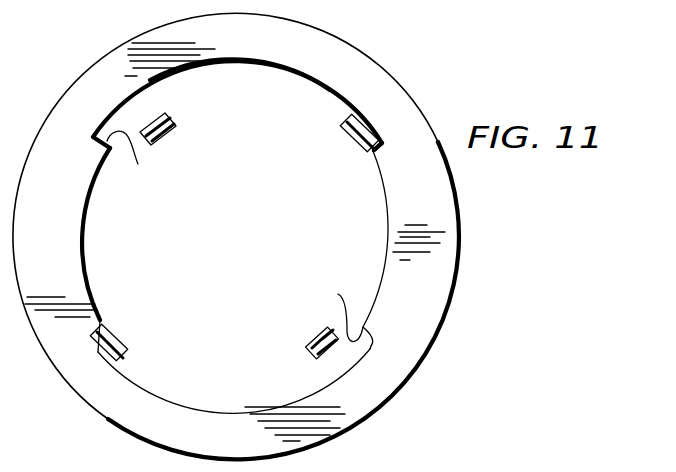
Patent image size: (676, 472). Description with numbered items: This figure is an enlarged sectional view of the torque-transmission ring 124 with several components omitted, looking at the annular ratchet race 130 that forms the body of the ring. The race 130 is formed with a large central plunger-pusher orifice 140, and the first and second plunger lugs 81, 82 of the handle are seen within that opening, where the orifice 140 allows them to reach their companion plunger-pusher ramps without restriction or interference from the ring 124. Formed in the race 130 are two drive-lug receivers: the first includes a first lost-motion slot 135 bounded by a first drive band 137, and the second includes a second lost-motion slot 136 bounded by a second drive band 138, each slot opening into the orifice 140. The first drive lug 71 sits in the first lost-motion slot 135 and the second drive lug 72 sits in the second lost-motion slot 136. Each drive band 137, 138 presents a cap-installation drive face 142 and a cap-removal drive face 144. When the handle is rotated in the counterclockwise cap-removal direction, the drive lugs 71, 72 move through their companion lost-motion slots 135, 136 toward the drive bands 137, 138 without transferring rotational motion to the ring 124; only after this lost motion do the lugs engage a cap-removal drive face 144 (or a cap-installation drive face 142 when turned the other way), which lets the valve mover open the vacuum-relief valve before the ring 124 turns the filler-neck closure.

The torque-transmission ring 124 is at (397, 67).
The annular ratchet race 130 is at (390, 119).
The second lost-motion slot 136 is at (260, 88).
The second drive band 138 is at (392, 210).
The first lost-motion slot 135 is at (230, 401).
The first drive band 137 is at (72, 254).
The plunger-pusher orifice 140 is at (317, 215).
The first plunger lug 81 is at (168, 113).
The second drive lug 72 is at (342, 129).
The first drive lug 71 is at (127, 343).
The second plunger lug 82 is at (324, 328).
The cap-installation drive face 142 is at (357, 149).
The cap-removal drive face 144 is at (235, 236).